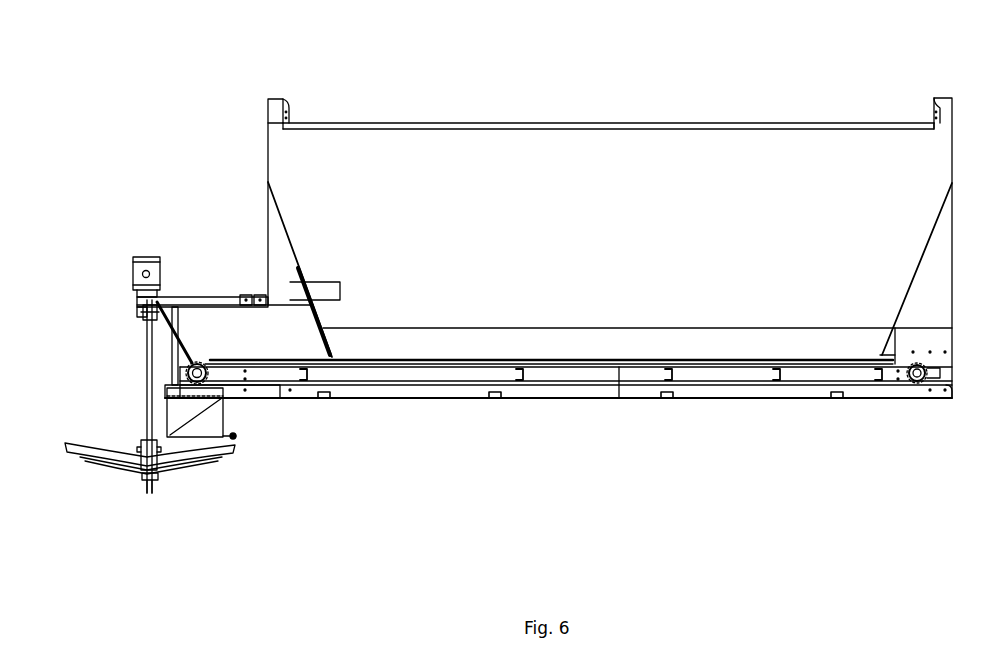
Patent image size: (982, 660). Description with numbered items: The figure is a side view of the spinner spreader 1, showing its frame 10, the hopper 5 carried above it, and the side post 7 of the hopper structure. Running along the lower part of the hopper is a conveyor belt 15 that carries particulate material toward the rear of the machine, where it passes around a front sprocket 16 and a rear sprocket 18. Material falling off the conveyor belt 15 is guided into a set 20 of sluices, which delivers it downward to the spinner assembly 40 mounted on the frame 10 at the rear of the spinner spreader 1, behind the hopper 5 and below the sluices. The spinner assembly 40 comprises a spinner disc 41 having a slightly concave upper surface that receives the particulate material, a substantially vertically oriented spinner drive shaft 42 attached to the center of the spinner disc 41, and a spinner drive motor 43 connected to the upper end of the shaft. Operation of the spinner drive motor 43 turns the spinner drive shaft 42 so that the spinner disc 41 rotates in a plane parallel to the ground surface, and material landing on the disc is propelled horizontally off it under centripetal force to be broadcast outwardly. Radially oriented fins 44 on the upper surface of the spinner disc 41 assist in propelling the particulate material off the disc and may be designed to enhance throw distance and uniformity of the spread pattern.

The spinner spreader 1 is at (600, 58).
The hopper 5 is at (712, 125).
The hopper side post 7 is at (266, 150).
The frame 10 is at (577, 398).
The conveyor belt 15 is at (421, 385).
The front sprocket 16 is at (200, 366).
The rear sprocket 18 is at (914, 384).
The set of sluices 20 is at (226, 418).
The spinner assembly 40 is at (120, 482).
The spinner disc 41 is at (172, 470).
The spinner drive shaft 42 is at (148, 352).
The spinner drive motor 43 is at (150, 257).
The fins 44 is at (82, 445).